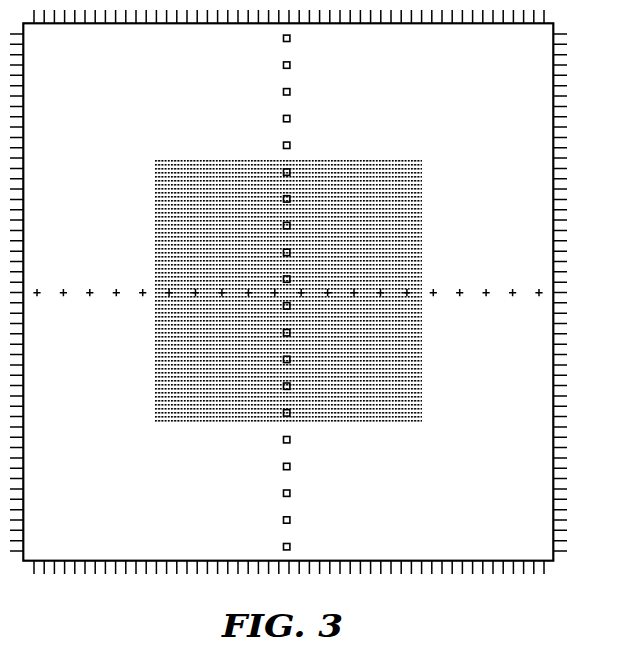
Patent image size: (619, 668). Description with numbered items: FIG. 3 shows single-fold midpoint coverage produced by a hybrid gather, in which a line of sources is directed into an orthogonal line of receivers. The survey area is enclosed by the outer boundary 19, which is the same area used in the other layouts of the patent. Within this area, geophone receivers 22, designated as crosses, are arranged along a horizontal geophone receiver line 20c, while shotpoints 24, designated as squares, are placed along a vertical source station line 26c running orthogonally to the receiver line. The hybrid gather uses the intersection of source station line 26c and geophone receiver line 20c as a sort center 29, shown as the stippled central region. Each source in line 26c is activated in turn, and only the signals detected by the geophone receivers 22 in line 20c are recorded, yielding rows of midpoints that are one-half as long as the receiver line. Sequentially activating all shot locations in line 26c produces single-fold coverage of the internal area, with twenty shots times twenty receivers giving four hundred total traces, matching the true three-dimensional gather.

The outer boundary 19 is at (554, 143).
The geophone receiver line 20c is at (498, 292).
The geophone receivers 22 is at (90, 296).
The shotpoints 24 is at (290, 92).
The source station line 26c is at (290, 65).
The sort center 29 is at (428, 210).